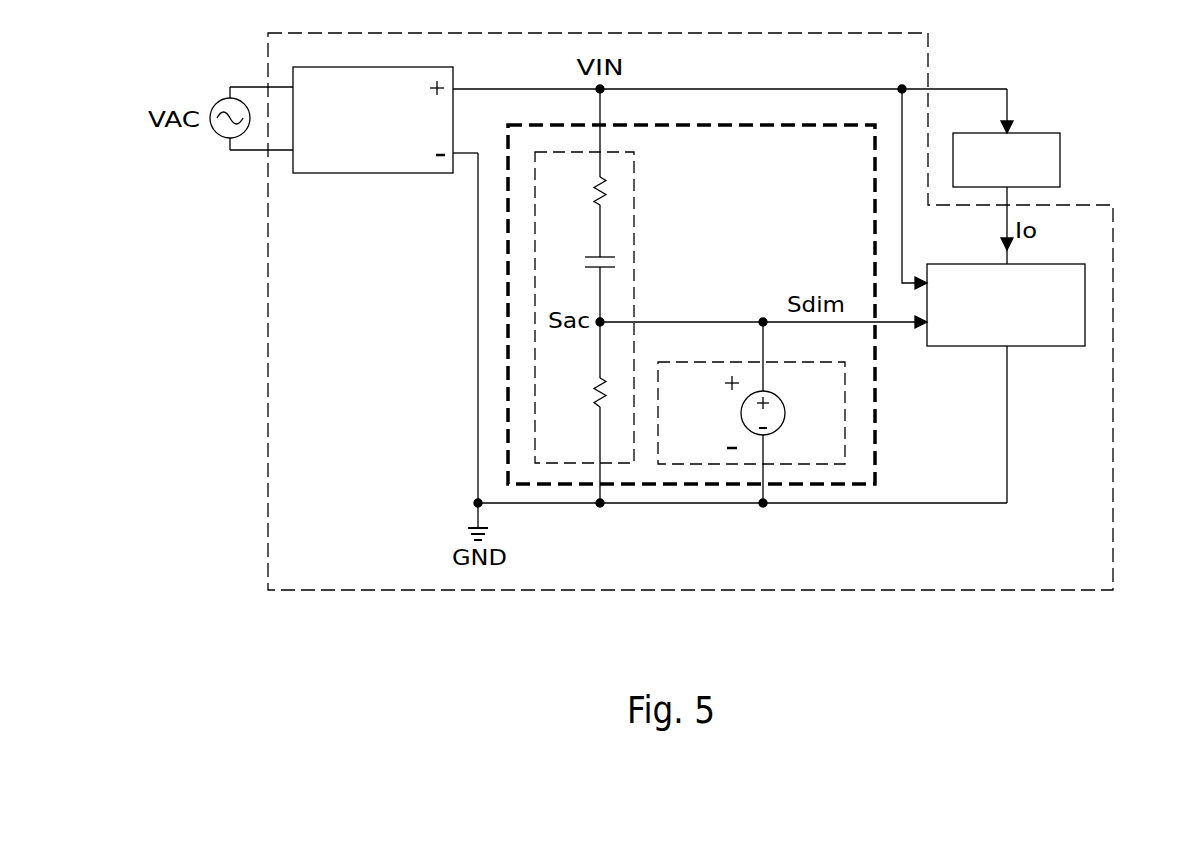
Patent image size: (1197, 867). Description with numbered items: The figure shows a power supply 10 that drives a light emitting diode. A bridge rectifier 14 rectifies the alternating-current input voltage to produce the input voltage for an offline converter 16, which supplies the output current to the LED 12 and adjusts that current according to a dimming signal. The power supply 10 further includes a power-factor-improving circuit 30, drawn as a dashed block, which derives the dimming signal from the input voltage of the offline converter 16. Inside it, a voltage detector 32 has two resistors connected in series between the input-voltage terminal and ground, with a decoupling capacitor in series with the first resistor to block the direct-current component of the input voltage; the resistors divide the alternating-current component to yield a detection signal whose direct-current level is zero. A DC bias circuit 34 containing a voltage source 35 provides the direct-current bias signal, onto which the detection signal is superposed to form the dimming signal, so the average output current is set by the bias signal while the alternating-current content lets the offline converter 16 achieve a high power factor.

The power supply 10 is at (1113, 325).
The LED 12 is at (1060, 155).
The bridge rectifier 14 is at (370, 173).
The offline converter 16 is at (1043, 346).
The power-factor-improving circuit 30 is at (875, 400).
The voltage detector 32 is at (634, 208).
The DC bias circuit 34 is at (802, 362).
The voltage source 35 is at (785, 395).